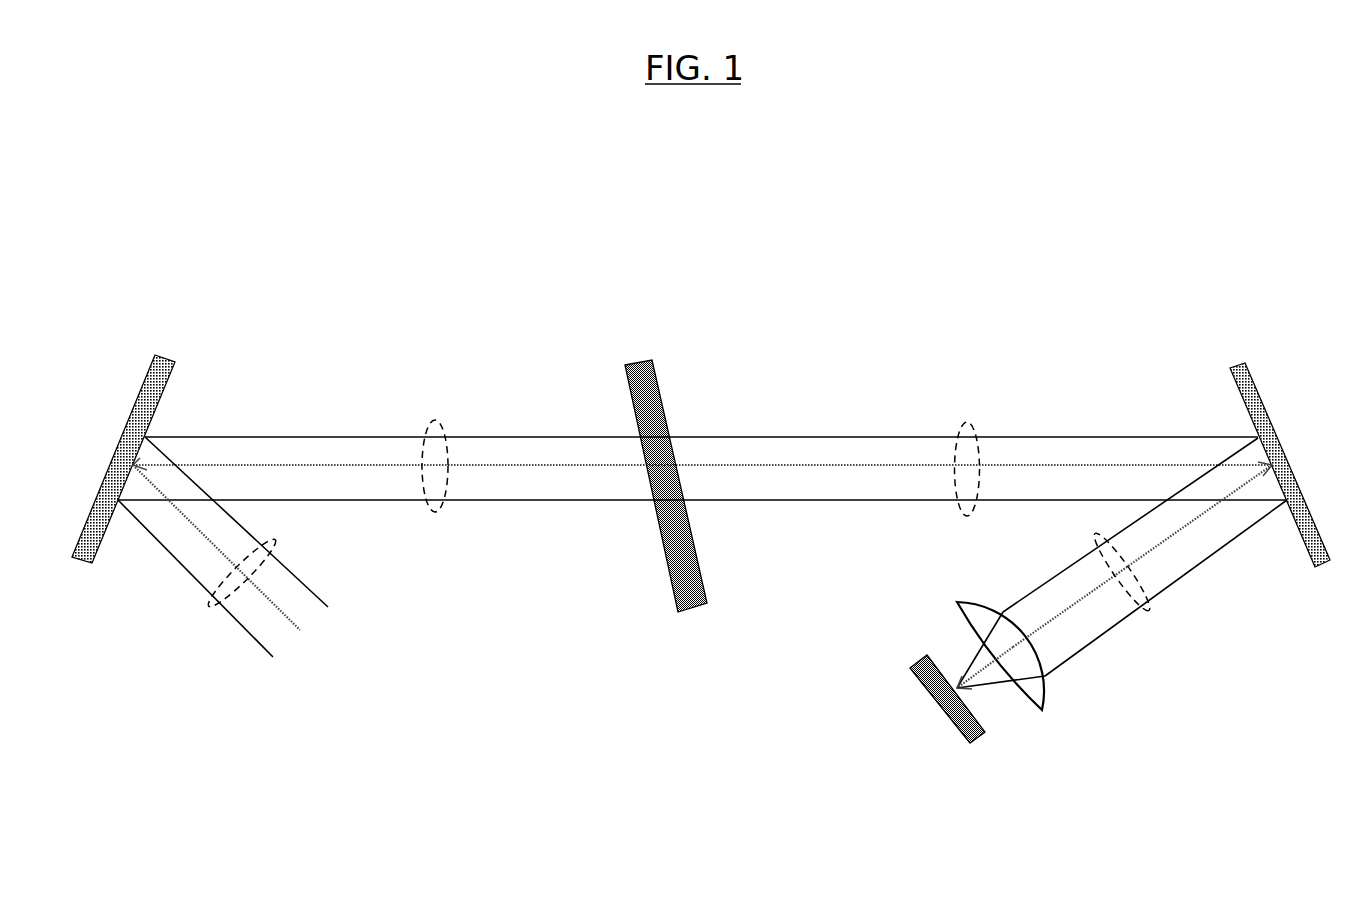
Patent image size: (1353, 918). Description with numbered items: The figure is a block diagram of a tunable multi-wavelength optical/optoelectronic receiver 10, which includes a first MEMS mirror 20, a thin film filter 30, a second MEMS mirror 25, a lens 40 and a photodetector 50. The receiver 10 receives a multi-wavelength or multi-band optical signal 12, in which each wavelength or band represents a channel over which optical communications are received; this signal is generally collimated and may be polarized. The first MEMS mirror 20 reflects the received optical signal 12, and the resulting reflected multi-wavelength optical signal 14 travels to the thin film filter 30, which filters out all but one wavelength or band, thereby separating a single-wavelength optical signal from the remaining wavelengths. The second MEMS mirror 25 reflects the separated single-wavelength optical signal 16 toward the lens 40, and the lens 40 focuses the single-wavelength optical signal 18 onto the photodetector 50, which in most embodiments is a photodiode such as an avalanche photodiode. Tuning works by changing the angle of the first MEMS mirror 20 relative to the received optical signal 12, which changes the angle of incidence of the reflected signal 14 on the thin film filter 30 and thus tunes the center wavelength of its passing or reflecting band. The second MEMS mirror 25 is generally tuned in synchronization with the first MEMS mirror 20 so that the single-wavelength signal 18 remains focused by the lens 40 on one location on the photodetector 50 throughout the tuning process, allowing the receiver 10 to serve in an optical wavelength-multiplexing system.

The optical/optoelectronic receiver 10 is at (770, 249).
The multi-wavelength or multi-band optical signal 12 is at (213, 603).
The reflected multi-wavelength or multi-band optical signal 14 is at (435, 418).
The separated single-wavelength optical signal 16 is at (962, 428).
The single-wavelength optical signal 18 is at (1148, 613).
The first MEMS mirror 20 is at (165, 355).
The second MEMS mirror 25 is at (1242, 363).
The thin film filter 30 is at (638, 362).
The lens 40 is at (1047, 687).
The photodetector 50 is at (912, 678).